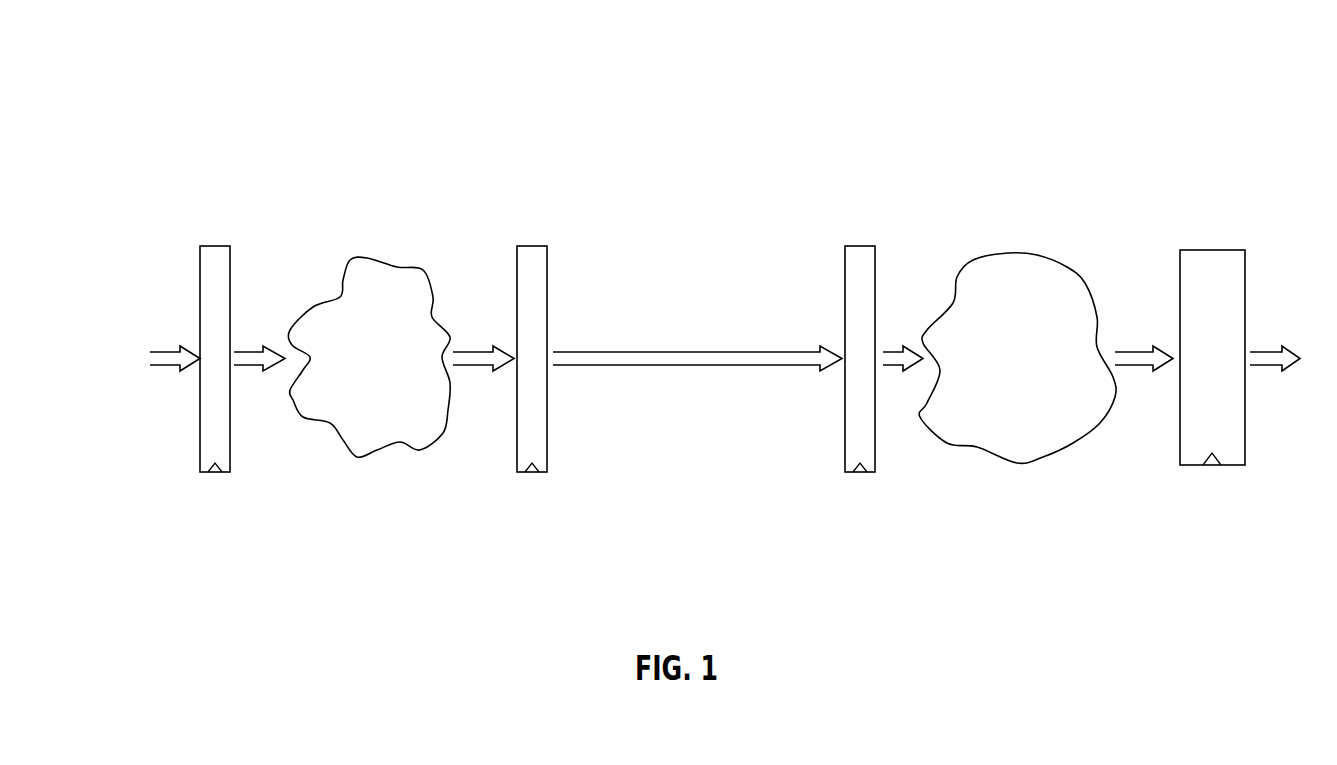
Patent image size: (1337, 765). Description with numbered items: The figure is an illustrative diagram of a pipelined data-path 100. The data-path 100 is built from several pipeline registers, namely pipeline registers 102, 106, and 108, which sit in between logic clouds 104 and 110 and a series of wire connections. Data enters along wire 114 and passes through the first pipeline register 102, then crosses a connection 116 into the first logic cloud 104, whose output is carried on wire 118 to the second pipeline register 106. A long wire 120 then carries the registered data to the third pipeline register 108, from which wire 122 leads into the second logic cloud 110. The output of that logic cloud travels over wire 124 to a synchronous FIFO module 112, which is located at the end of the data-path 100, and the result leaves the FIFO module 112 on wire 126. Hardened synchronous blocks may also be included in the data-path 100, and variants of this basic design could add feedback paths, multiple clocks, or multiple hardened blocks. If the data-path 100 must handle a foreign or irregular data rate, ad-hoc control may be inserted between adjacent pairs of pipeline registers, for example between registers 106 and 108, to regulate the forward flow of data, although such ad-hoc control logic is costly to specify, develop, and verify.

The data-path 100 is at (250, 76).
The pipeline register 102 is at (215, 243).
The logic cloud 104 is at (370, 258).
The pipeline register 106 is at (533, 243).
The pipeline register 108 is at (860, 243).
The logic cloud 110 is at (1008, 253).
The synchronous FIFO module 112 is at (1245, 313).
The wire 114 is at (165, 367).
The registered data signal 116 is at (250, 367).
The wire 118 is at (470, 367).
The wire 120 is at (617, 367).
The wire 122 is at (888, 367).
The wire 124 is at (1128, 367).
The wire 126 is at (1263, 367).